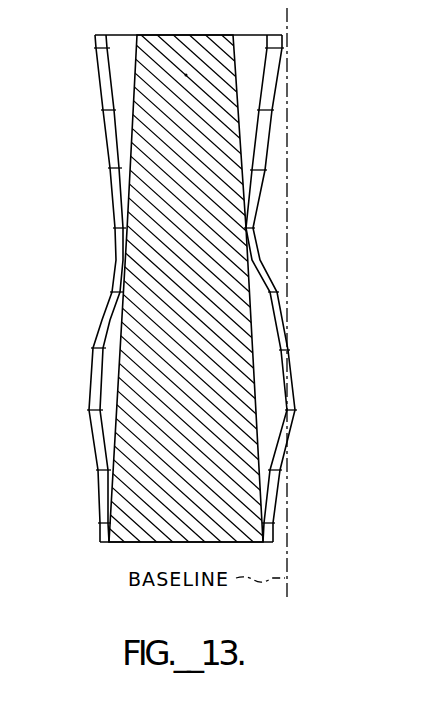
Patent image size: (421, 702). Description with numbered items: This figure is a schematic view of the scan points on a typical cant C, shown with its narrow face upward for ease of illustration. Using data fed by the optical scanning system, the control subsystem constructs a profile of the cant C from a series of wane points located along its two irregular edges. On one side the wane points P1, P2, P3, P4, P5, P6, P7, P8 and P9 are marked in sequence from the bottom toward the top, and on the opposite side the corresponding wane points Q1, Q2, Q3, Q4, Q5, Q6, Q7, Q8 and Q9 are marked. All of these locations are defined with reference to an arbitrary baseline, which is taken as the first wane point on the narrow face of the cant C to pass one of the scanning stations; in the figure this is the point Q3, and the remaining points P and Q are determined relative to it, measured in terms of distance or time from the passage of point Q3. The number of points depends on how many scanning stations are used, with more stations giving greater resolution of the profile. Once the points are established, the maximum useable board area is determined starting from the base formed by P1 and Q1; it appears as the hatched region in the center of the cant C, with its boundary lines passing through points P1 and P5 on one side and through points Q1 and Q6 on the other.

The cant C is at (186, 75).
The wane point P1 is at (98, 523).
The wane point P2 is at (96, 470).
The wane point P3 is at (87, 410).
The wane point P4 is at (91, 348).
The wane point P5 is at (110, 292).
The wane point P6 is at (113, 228).
The wane point P7 is at (108, 168).
The wane point P8 is at (101, 110).
The wane point P9 is at (94, 48).
The wane point Q1 is at (266, 526).
The wane point Q2 is at (272, 470).
The wane point Q3 is at (290, 410).
The wane point Q4 is at (283, 349).
The wane point Q5 is at (272, 290).
The wane point Q6 is at (248, 228).
The wane point Q7 is at (255, 168).
The wane point Q8 is at (262, 108).
The wane point Q9 is at (270, 48).